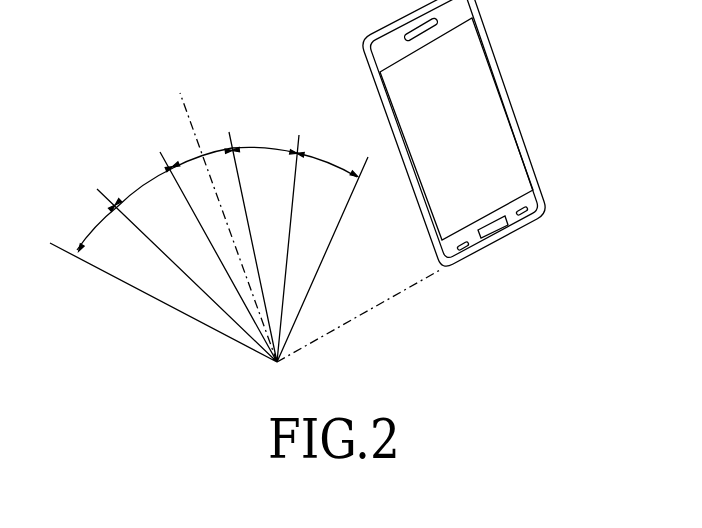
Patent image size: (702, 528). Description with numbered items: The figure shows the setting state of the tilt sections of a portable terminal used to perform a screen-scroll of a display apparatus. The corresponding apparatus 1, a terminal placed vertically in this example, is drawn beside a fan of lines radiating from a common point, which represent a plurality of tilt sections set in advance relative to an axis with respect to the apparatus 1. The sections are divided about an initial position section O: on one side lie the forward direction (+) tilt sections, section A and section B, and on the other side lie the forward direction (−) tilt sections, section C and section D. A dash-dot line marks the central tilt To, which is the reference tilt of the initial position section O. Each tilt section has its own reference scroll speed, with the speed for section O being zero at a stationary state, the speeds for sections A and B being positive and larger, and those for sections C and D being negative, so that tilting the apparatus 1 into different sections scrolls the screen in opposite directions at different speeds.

The apparatus 1 is at (513, 97).
The section A is at (264, 139).
The section B is at (327, 160).
The section C is at (144, 181).
The section D is at (95, 226).
The section O is at (202, 148).
The central tilt To is at (224, 215).